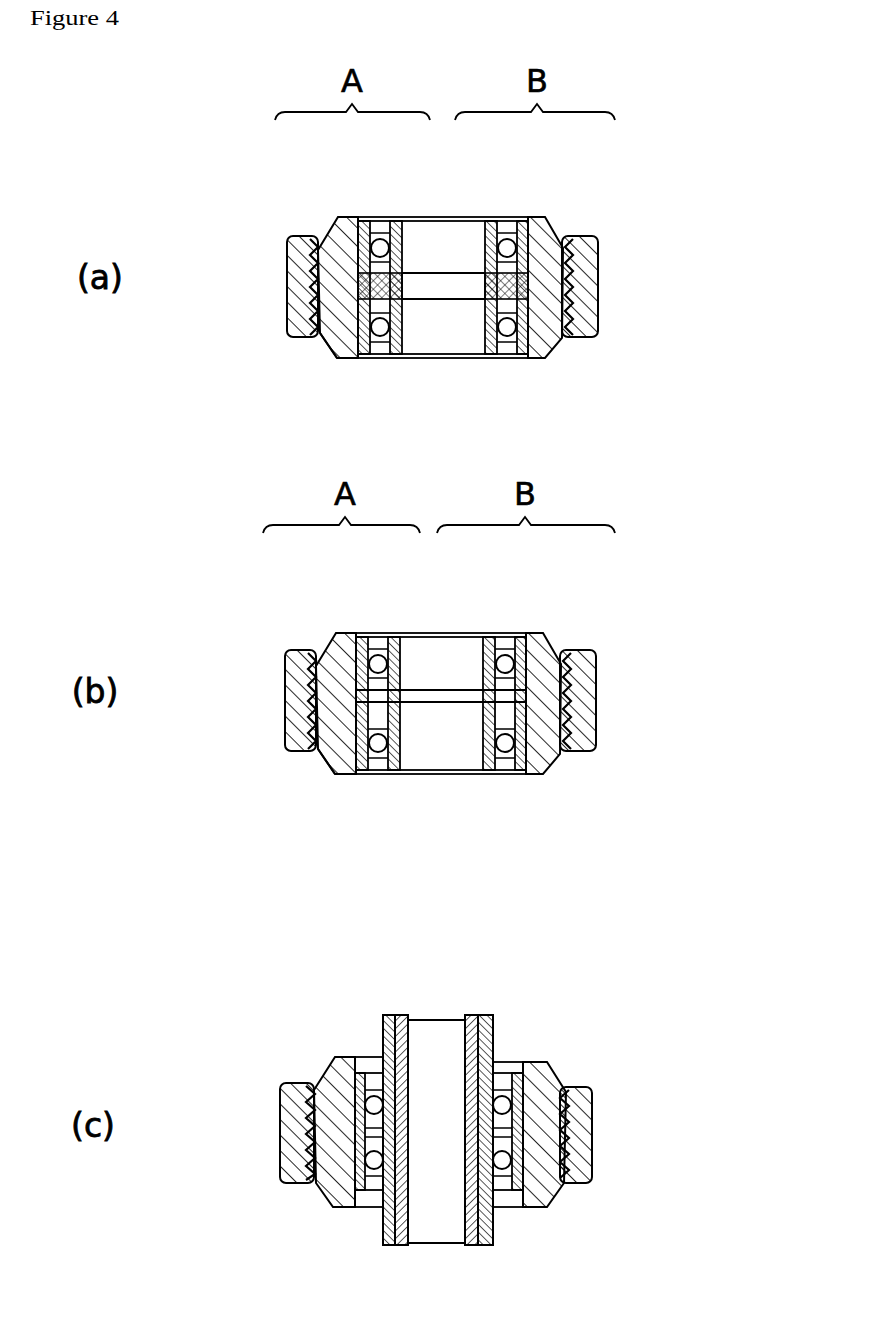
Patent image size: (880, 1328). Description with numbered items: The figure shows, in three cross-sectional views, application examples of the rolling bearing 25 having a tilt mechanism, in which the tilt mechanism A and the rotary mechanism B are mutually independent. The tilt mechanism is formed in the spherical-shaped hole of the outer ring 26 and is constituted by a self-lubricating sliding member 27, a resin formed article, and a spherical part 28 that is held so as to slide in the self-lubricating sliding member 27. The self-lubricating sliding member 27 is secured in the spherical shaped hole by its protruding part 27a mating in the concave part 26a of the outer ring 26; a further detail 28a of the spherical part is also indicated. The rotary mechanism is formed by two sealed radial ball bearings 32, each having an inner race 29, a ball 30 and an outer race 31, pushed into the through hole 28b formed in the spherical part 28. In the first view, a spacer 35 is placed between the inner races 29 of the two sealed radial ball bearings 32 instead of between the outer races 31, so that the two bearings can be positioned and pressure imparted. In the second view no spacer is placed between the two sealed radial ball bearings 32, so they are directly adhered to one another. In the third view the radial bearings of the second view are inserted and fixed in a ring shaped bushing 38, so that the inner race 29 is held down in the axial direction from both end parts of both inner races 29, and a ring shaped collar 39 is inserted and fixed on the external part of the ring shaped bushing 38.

The rolling bearing 25 is at (466, 720).
The outer ring 26 is at (294, 242).
The concave part 26a is at (290, 302).
The self-lubricating sliding member 27 is at (320, 238).
The protruding part 27a is at (295, 330).
The spherical part 28 is at (370, 656).
The outer ring of bearing A 28a is at (326, 236).
The through hole 28b is at (545, 237).
The inner race 29 is at (492, 224).
The ball 30 is at (506, 226).
The outer race 31 is at (525, 228).
The sealed radial ball bearing 32 is at (463, 217).
The spacer 35 is at (419, 312).
The ring shaped bushing 38 is at (430, 1030).
The ring shaped collar 39 is at (376, 1022).